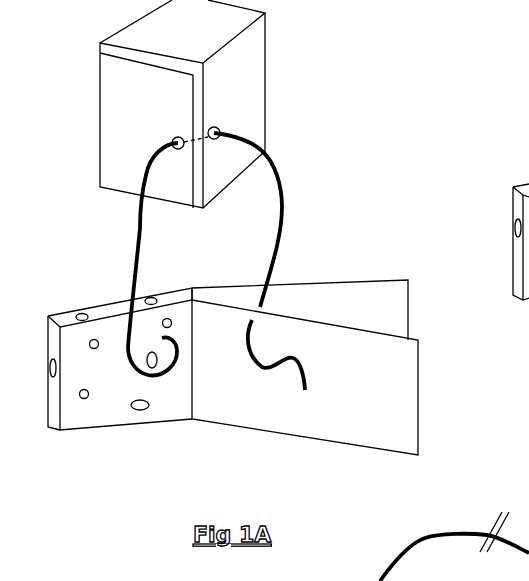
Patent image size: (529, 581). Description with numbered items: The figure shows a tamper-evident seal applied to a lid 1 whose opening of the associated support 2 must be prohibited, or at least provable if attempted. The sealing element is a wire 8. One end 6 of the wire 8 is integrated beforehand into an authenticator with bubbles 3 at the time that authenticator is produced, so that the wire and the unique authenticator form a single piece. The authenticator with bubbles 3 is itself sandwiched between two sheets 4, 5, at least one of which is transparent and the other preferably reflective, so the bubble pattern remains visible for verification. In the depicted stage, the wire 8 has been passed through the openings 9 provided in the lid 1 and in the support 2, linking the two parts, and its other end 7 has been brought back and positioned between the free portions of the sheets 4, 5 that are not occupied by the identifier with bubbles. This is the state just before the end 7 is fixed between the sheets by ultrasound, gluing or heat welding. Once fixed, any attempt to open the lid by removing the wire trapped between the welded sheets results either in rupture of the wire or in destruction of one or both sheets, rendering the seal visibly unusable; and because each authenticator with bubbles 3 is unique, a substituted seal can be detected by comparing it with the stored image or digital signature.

The lid 1 is at (122, 113).
The support 2 is at (243, 75).
The authenticator with bubbles 3 is at (56, 398).
The sheet 4 is at (376, 310).
The sheet 5 is at (376, 368).
The end of the wire 6 is at (167, 339).
The other end of the wire 7 is at (305, 390).
The wire 8 is at (283, 197).
The openings 9 is at (178, 150).